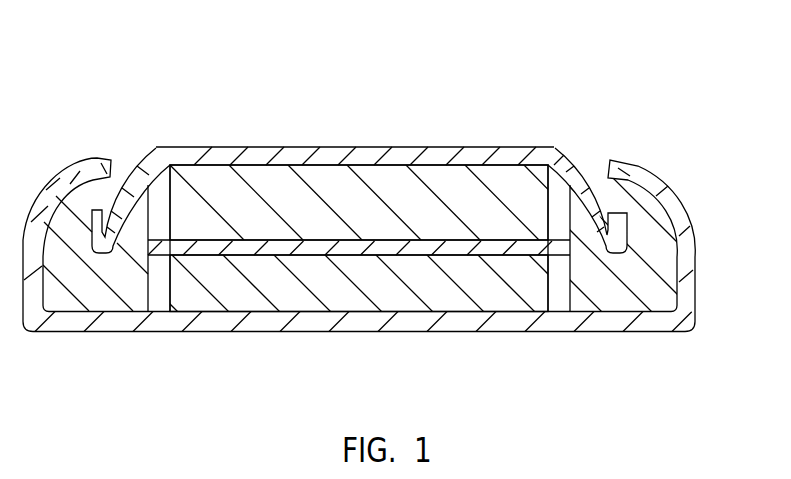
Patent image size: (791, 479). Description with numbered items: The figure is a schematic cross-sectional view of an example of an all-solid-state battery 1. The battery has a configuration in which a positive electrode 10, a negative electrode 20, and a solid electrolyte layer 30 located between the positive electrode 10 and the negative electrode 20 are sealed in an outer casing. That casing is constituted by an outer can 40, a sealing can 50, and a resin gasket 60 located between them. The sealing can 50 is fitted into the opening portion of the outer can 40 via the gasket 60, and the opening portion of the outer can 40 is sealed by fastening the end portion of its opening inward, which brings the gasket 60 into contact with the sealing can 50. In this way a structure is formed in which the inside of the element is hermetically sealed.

The all-solid-state battery 1 is at (402, 110).
The positive electrode 10 is at (352, 295).
The negative electrode 20 is at (337, 193).
The solid electrolyte layer 30 is at (243, 247).
The outer can 40 is at (468, 321).
The sealing can 50 is at (478, 147).
The resin gasket 60 is at (655, 251).